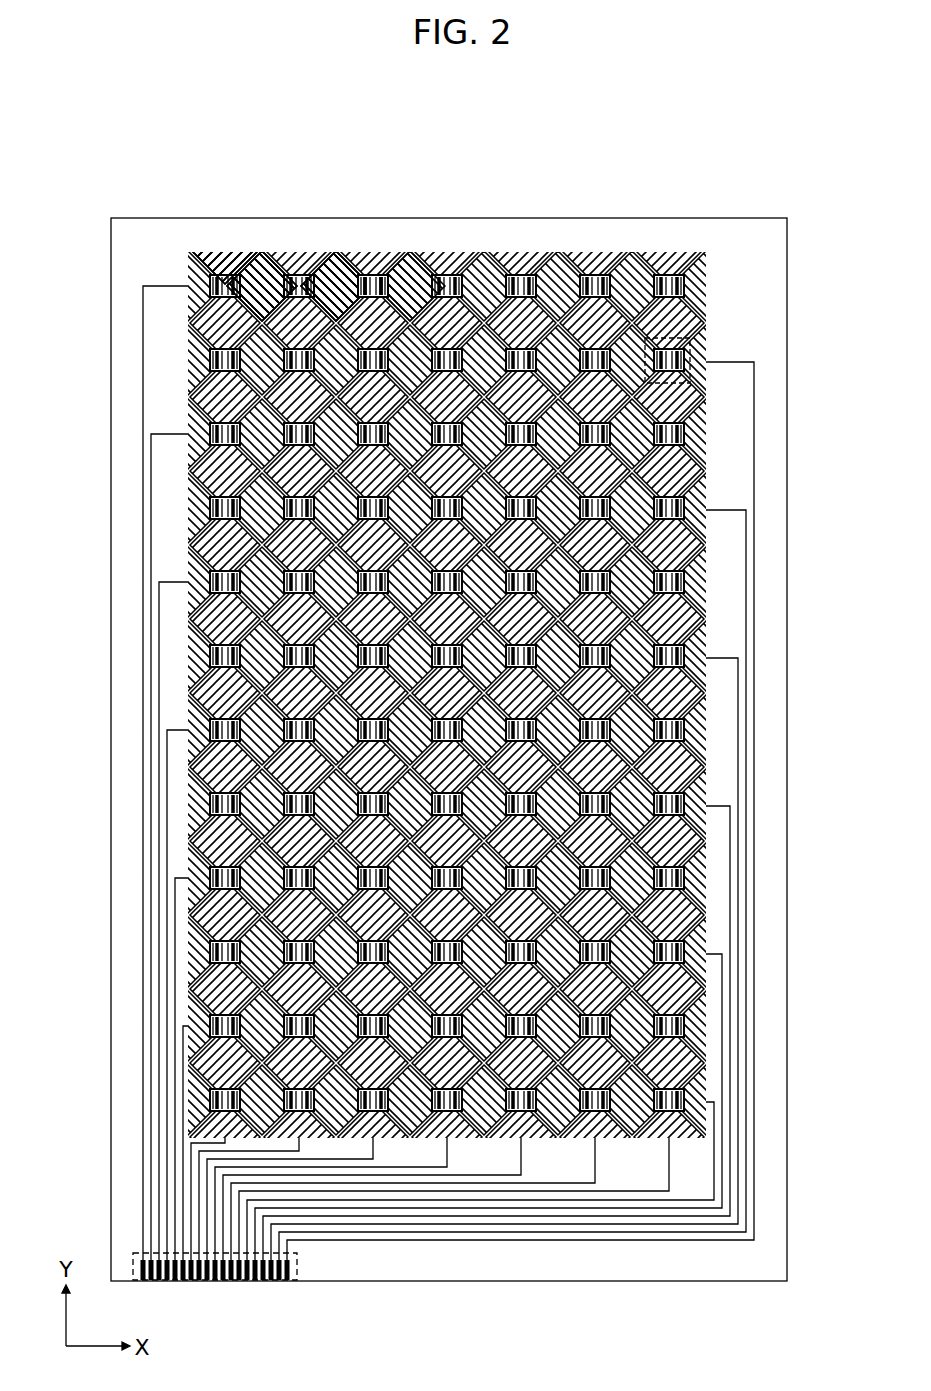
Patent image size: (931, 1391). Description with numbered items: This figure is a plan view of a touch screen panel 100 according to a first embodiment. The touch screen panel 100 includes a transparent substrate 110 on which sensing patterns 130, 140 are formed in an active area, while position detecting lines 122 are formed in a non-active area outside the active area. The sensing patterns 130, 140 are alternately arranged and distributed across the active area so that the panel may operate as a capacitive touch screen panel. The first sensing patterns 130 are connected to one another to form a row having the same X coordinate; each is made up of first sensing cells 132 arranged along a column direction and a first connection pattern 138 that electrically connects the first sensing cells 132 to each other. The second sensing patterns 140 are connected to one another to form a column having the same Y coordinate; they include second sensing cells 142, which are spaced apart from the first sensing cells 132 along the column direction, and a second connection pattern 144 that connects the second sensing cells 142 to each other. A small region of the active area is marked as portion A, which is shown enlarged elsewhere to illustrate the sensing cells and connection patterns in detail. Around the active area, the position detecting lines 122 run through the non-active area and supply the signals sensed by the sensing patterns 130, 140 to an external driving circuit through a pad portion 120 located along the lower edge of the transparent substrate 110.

The touch screen panel 100 is at (461, 85).
The transparent substrate 110 is at (645, 218).
The pad portion 120 is at (300, 1268).
The position detecting lines 122 is at (140, 342).
The first sensing patterns 130 is at (373, 286).
The first sensing cells 132 is at (336, 286).
The first connection pattern 138 is at (373, 286).
The second sensing patterns 140 is at (243, 267).
The second sensing cells 142 is at (262, 286).
The second connection pattern 144 is at (225, 249).
The portion A is at (690, 345).